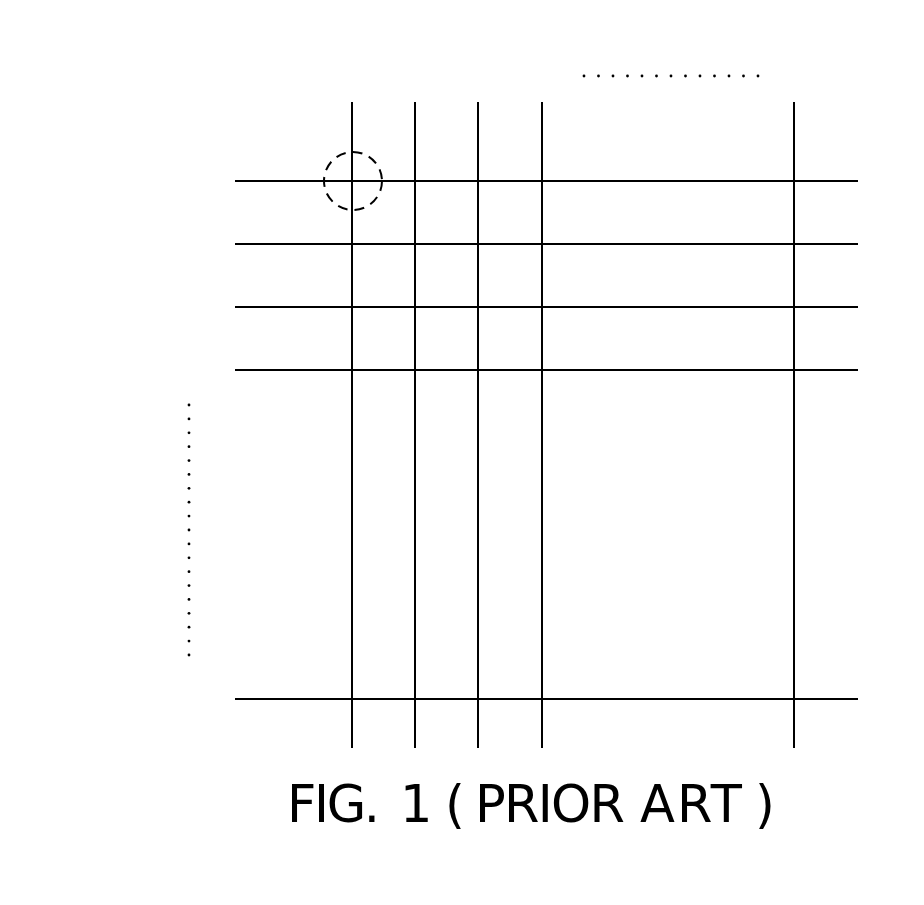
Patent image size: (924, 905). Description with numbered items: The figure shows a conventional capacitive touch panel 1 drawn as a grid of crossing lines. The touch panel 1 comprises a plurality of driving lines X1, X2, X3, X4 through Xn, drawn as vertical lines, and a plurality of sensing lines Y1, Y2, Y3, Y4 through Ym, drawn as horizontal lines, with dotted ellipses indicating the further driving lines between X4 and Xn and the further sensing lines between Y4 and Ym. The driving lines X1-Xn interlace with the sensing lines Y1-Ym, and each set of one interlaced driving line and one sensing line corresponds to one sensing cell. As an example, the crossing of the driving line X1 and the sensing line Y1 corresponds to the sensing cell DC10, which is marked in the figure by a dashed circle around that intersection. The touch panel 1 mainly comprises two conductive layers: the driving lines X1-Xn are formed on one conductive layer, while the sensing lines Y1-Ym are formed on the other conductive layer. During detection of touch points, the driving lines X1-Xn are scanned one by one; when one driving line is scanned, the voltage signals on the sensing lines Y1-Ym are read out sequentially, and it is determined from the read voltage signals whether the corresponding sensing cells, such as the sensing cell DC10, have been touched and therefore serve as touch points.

The capacitive touch panel 1 is at (178, 62).
The sensing cell DC10 is at (333, 162).
The driving line X1 is at (353, 401).
The driving line X2 is at (417, 401).
The driving line X3 is at (479, 401).
The driving line X4 is at (543, 401).
The driving line Xn is at (794, 401).
The sensing line Y1 is at (517, 172).
The sensing line Y2 is at (517, 242).
The sensing line Y3 is at (517, 305).
The sensing line Y4 is at (517, 371).
The sensing line Ym is at (517, 693).